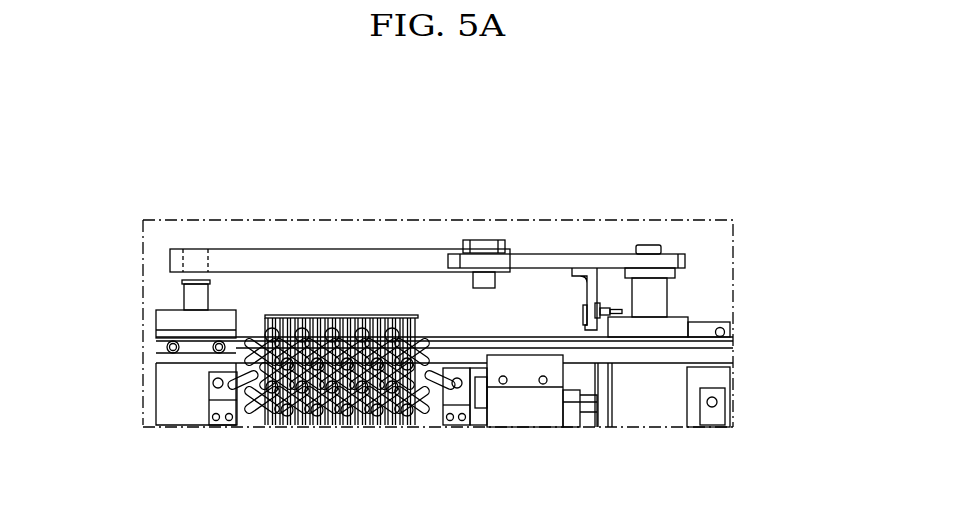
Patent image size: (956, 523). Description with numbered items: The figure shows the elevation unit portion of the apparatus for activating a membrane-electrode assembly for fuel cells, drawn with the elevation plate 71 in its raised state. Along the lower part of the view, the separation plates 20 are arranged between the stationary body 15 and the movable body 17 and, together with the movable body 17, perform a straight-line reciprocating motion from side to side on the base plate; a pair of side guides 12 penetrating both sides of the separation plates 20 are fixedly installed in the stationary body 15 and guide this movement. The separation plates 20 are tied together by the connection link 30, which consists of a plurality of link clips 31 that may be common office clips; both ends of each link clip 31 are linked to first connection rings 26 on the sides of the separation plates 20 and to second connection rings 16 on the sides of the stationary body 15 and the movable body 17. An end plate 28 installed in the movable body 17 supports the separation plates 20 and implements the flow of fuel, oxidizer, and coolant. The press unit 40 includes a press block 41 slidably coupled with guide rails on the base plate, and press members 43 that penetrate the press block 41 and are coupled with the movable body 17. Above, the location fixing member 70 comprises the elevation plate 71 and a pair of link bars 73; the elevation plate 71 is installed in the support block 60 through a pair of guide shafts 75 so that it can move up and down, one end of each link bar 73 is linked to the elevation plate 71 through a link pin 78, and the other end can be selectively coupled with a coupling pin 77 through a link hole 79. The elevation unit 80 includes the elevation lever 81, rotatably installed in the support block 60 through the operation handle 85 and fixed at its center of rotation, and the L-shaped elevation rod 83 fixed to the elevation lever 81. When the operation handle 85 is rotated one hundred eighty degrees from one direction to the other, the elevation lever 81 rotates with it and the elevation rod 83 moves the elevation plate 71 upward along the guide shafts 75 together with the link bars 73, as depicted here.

The side guide 12 is at (718, 350).
The stationary body 15 is at (166, 388).
The second connection ring 16 is at (218, 392).
The movable body 17 is at (465, 400).
The separation plate 20 is at (297, 442).
The first connection ring 26 is at (345, 415).
The end plate 28 is at (420, 420).
The connection link 30 is at (342, 410).
The link clip 31 is at (318, 420).
The press unit 40 is at (549, 435).
The press block 41 is at (540, 408).
The press member 43 is at (583, 412).
The support block 60 is at (656, 402).
The location fixing member 70 is at (690, 243).
The elevation plate 71 is at (540, 260).
The link bar 73 is at (283, 260).
The guide shaft 75 is at (652, 298).
The coupling pin 77 is at (195, 297).
The link pin 78 is at (484, 243).
The link hole 79 is at (210, 258).
The elevation unit 80 is at (608, 284).
The elevation lever 81 is at (604, 324).
The elevation rod 83 is at (600, 266).
The operation handle 85 is at (703, 330).